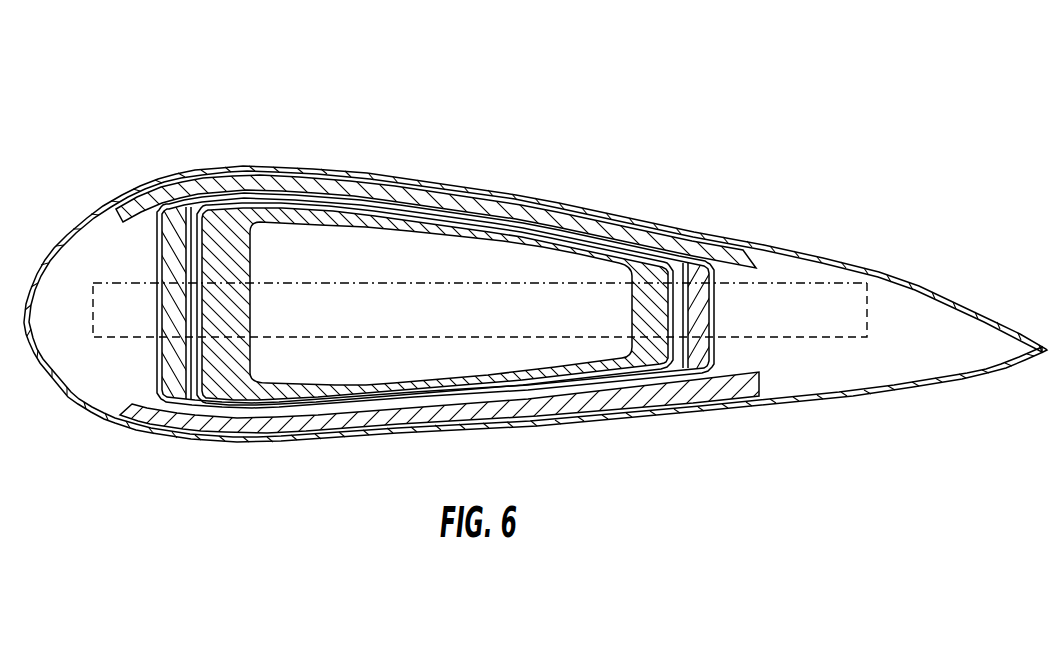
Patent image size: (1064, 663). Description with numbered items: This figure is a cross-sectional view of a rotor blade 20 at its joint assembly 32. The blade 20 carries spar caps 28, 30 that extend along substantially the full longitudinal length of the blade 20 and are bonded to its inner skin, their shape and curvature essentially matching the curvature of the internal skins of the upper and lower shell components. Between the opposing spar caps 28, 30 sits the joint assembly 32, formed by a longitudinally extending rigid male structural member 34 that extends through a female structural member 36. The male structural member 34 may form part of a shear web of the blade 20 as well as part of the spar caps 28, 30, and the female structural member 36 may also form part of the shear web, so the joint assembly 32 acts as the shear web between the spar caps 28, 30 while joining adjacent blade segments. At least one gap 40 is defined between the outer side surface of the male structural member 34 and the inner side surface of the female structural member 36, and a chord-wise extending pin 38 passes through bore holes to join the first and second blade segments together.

The rotor blade 20 is at (913, 277).
The spar cap 28 is at (253, 182).
The spar cap 30 is at (230, 422).
The joint assembly 32 is at (523, 285).
The male structural member 34 is at (446, 236).
The female structural member 36 is at (180, 315).
The chord-wise extending pin 38 is at (831, 340).
The gap 40 is at (230, 223).